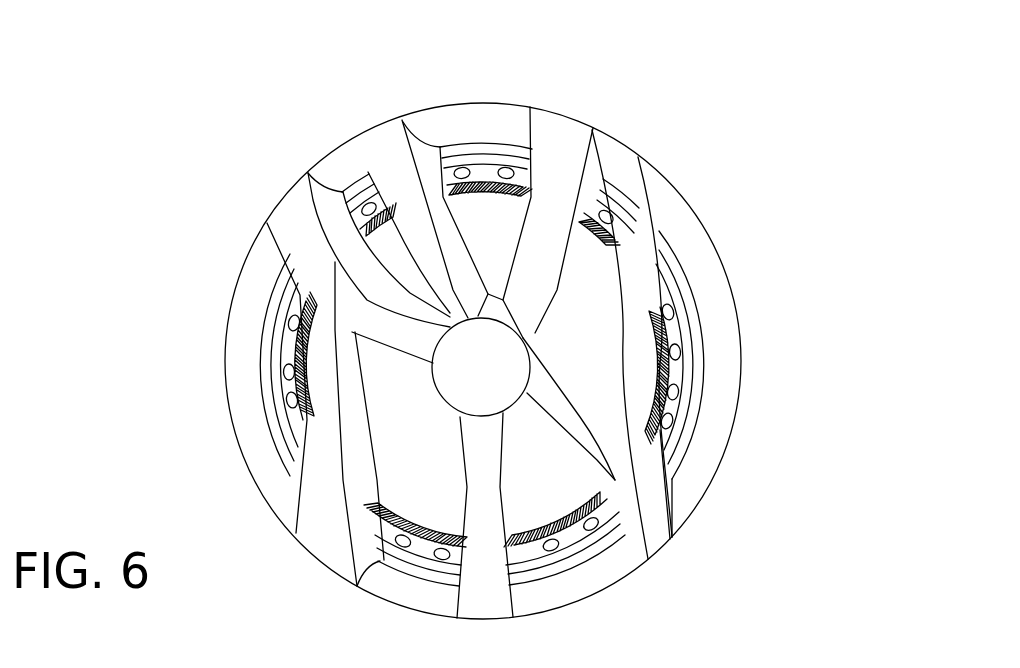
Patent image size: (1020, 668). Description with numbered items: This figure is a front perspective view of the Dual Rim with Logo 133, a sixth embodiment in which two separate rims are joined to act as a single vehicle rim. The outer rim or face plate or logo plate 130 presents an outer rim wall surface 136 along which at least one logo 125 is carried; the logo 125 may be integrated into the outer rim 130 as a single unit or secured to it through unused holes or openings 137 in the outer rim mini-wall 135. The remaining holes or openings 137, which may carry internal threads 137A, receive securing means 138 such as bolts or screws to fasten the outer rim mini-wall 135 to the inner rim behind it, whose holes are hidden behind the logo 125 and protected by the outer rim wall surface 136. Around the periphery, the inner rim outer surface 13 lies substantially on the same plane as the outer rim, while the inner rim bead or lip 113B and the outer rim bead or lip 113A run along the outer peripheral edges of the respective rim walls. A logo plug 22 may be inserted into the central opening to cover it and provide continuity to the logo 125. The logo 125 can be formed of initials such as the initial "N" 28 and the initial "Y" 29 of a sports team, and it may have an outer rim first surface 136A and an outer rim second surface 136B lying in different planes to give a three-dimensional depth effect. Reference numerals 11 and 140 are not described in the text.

The rim well 11 is at (500, 197).
The inner rim outer surface 13 is at (455, 103).
The logo plug 22 is at (473, 377).
The initial "N" 28 is at (665, 203).
The initial "Y" 29 is at (557, 147).
The outer rim bead or lip 113A is at (665, 180).
The inner rim bead or lip 113B is at (630, 158).
The logo 125 is at (375, 152).
The outer rim or second rim or face plate or logo plate 130 is at (590, 145).
The Dual Rim with Logo 133 is at (797, 137).
The outer rim mini-wall or mini-rim 135 is at (482, 165).
The outer rim wall surface 136 is at (717, 413).
The outer rim first surface 136A is at (700, 457).
The outer rim second surface 136B is at (643, 547).
The holes or openings 137 is at (682, 313).
The internal threads 137A is at (678, 387).
The securing means 138 is at (678, 337).
The rim lip 140 is at (258, 282).